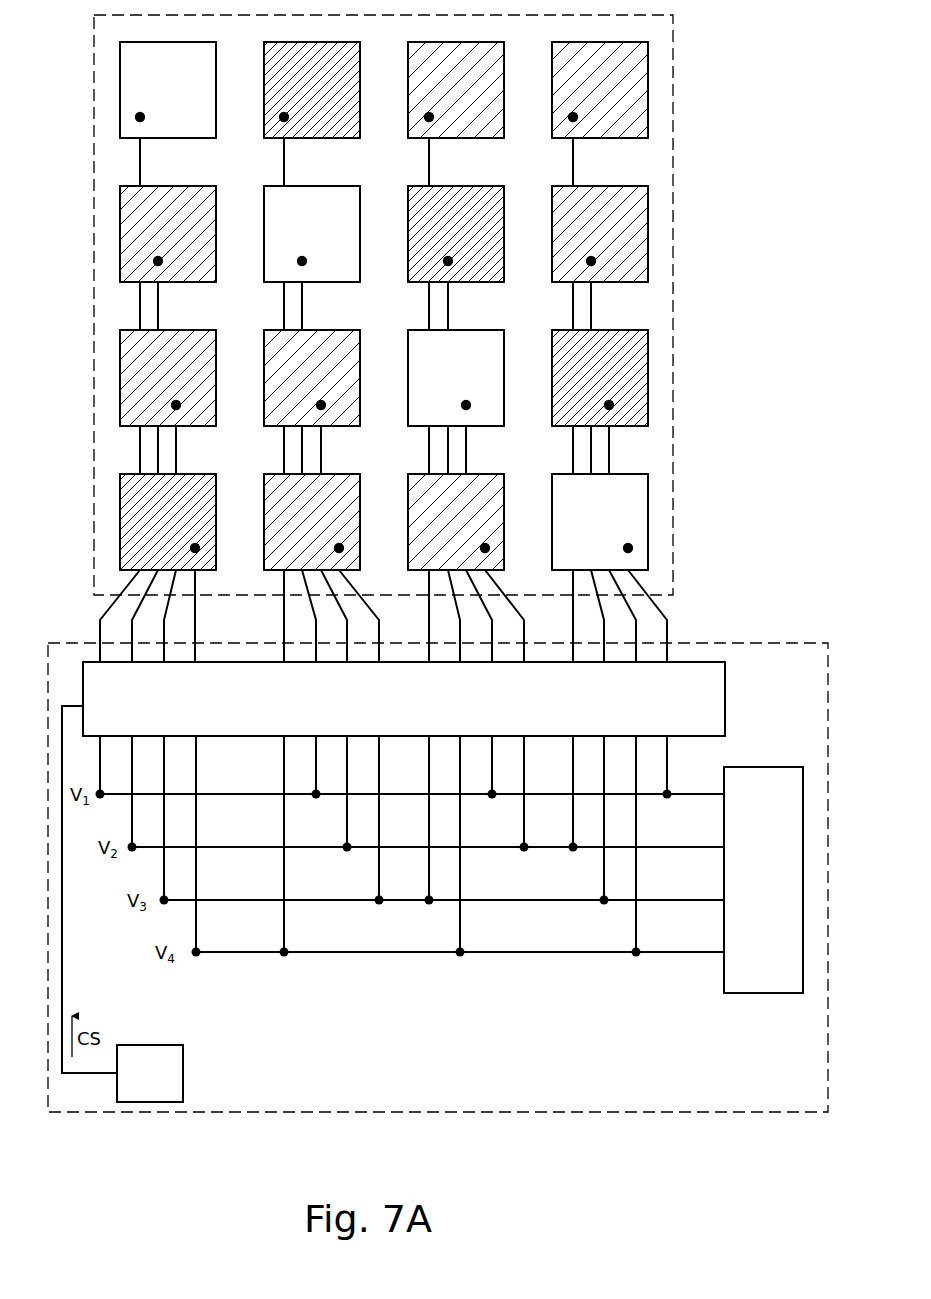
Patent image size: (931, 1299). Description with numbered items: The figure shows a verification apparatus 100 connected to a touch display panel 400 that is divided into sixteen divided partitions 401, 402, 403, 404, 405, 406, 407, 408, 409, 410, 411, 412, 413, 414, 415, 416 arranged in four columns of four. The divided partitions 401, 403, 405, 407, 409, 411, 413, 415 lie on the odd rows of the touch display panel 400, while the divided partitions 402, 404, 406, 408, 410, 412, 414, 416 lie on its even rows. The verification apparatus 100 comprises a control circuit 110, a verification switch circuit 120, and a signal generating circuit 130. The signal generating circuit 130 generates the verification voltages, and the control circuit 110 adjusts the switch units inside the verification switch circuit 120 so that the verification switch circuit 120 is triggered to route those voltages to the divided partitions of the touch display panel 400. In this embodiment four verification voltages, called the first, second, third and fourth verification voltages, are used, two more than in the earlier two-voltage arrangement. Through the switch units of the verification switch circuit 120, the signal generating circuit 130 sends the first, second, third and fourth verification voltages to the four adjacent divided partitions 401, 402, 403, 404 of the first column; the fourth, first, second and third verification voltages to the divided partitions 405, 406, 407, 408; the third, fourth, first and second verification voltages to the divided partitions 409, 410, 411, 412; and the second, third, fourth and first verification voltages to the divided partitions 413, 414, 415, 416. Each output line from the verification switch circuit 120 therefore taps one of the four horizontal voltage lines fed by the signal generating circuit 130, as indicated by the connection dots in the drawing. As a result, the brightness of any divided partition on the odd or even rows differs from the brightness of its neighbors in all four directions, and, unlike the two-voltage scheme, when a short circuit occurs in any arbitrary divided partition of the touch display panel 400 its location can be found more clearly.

The verification apparatus 100 is at (728, 643).
The control circuit 110 is at (132, 1085).
The verification switch circuit 120 is at (725, 705).
The signal generating circuit 130 is at (745, 891).
The touch display panel 400 is at (673, 320).
The divided partition 401 is at (150, 84).
The divided partition 402 is at (150, 228).
The divided partition 403 is at (150, 372).
The divided partition 404 is at (150, 516).
The divided partition 405 is at (294, 84).
The divided partition 406 is at (294, 228).
The divided partition 407 is at (294, 372).
The divided partition 408 is at (294, 516).
The divided partition 409 is at (438, 84).
The divided partition 410 is at (438, 228).
The divided partition 411 is at (438, 372).
The divided partition 412 is at (438, 516).
The divided partition 413 is at (582, 84).
The divided partition 414 is at (582, 228).
The divided partition 415 is at (582, 372).
The divided partition 416 is at (582, 516).